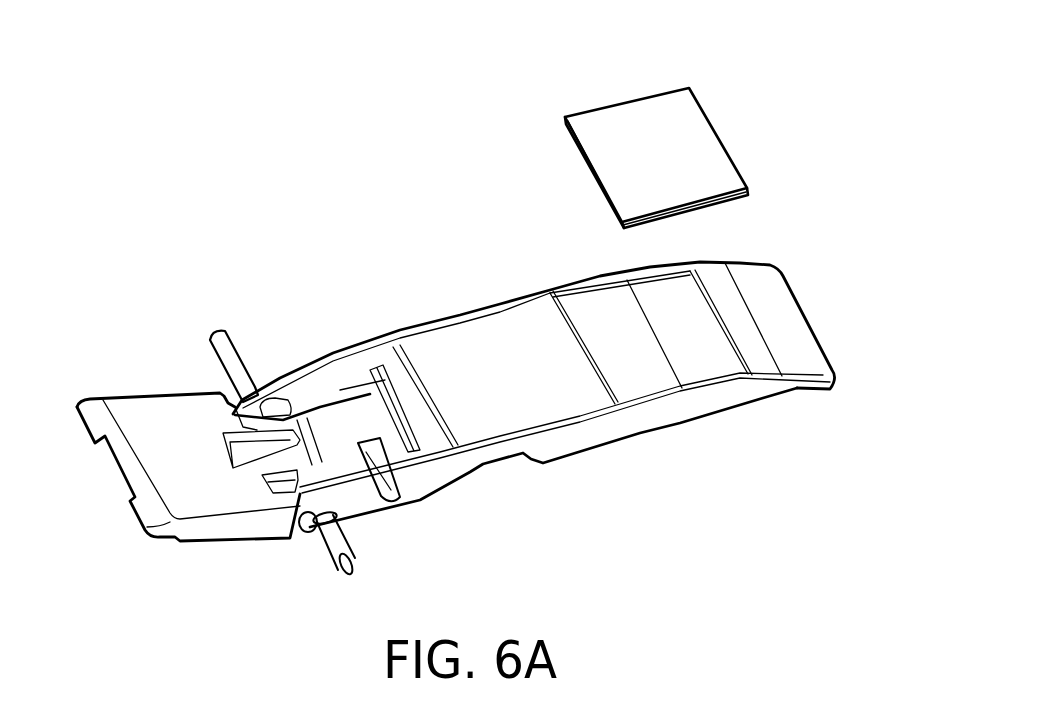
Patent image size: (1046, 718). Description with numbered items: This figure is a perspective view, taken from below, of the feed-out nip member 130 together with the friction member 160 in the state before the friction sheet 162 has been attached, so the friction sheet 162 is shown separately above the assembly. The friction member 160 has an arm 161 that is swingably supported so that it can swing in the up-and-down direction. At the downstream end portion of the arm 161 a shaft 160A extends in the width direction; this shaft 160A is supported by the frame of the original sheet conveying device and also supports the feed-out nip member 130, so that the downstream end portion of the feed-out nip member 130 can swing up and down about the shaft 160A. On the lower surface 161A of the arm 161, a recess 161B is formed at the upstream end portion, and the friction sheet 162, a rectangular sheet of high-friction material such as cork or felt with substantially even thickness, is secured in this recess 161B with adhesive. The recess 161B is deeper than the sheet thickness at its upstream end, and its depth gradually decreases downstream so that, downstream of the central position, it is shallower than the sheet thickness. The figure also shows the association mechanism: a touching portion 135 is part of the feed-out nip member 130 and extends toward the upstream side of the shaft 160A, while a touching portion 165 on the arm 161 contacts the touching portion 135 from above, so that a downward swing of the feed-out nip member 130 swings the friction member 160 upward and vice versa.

The feed-out nip member 130 is at (143, 390).
The touching portion 135 is at (373, 425).
The friction member 160 is at (326, 352).
The shaft 160A is at (227, 343).
The arm 161 is at (534, 408).
The lower surface 161A is at (500, 337).
The recess 161B is at (625, 358).
The friction sheet 162 is at (667, 130).
The touching portion 165 is at (360, 390).